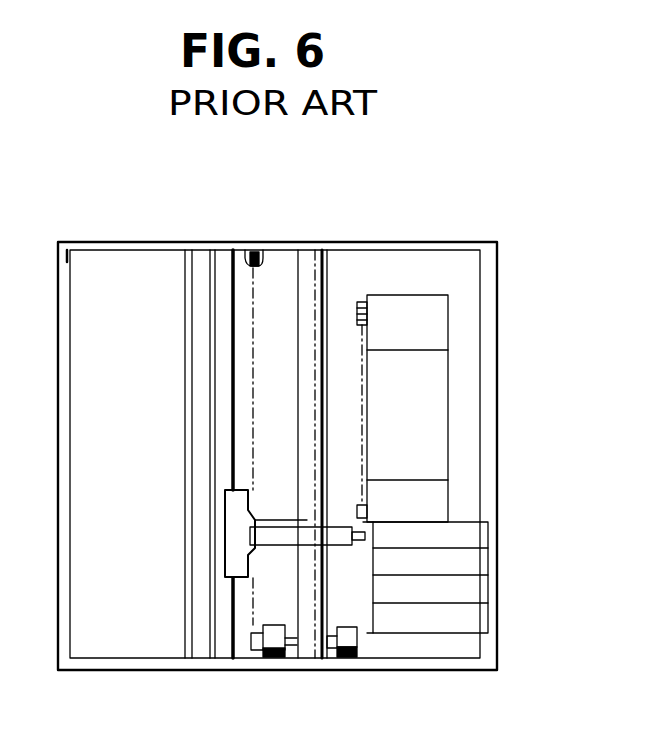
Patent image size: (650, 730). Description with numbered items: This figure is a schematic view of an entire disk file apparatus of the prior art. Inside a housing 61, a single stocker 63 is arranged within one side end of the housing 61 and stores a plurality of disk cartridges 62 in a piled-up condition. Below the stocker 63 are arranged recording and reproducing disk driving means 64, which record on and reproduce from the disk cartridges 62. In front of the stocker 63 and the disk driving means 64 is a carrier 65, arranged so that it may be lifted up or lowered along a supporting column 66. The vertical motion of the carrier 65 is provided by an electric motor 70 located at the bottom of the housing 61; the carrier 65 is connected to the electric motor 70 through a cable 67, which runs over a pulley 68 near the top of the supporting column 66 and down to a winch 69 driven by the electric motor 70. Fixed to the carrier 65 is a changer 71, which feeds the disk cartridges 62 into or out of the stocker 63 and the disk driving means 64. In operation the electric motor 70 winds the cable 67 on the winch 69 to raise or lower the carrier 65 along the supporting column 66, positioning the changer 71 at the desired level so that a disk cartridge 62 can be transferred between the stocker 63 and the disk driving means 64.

The housing 61 is at (497, 383).
The disk cartridges 62 is at (363, 300).
The stocker 63 is at (448, 430).
The disk driving means 64 is at (473, 557).
The carrier 65 is at (225, 545).
The supporting column 66 is at (196, 640).
The cable 67 is at (246, 640).
The pulley 68 is at (262, 258).
The winch 69 is at (272, 652).
The electric motor 70 is at (358, 645).
The changer 71 is at (337, 548).